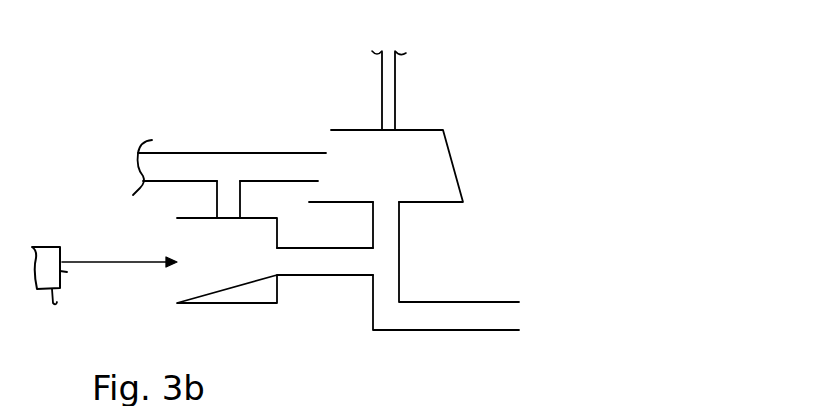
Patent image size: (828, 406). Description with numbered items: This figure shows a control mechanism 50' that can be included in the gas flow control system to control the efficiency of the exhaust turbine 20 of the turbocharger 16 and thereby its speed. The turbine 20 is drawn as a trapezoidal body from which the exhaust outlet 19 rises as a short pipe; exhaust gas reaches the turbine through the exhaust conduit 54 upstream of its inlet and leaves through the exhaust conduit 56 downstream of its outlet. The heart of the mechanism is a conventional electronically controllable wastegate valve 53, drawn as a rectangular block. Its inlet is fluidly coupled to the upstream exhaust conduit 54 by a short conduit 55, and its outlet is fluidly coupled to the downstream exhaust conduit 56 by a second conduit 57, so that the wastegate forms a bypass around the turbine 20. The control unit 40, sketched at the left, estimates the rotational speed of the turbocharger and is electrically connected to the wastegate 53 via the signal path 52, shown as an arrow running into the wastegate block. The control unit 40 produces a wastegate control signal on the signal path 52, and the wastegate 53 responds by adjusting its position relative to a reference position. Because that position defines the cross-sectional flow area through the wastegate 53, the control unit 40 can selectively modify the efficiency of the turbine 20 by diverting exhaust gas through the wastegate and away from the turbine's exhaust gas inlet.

The turbocharger 16 is at (442, 60).
The exhaust outlet 19 is at (397, 112).
The exhaust turbine 20 is at (453, 158).
The control unit 40 is at (64, 289).
The control mechanism 50' is at (365, 187).
The signal path 52 is at (133, 258).
The wastegate valve 53 is at (210, 305).
The exhaust conduit 54 is at (272, 152).
The conduit 55 is at (243, 192).
The exhaust conduit 56 is at (496, 301).
The conduit 57 is at (301, 278).